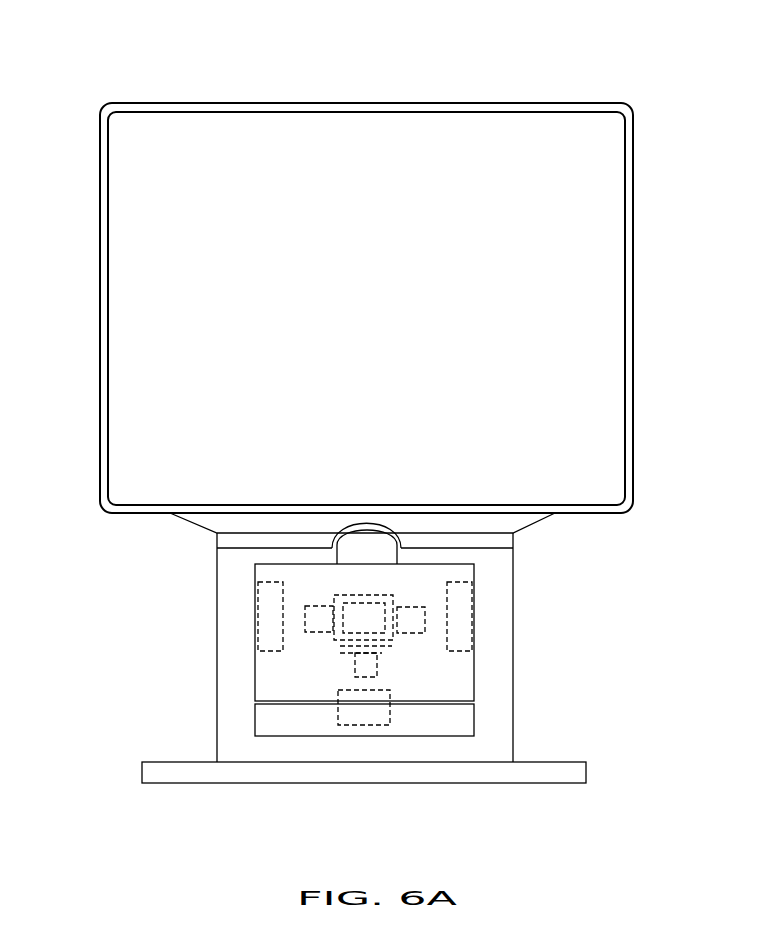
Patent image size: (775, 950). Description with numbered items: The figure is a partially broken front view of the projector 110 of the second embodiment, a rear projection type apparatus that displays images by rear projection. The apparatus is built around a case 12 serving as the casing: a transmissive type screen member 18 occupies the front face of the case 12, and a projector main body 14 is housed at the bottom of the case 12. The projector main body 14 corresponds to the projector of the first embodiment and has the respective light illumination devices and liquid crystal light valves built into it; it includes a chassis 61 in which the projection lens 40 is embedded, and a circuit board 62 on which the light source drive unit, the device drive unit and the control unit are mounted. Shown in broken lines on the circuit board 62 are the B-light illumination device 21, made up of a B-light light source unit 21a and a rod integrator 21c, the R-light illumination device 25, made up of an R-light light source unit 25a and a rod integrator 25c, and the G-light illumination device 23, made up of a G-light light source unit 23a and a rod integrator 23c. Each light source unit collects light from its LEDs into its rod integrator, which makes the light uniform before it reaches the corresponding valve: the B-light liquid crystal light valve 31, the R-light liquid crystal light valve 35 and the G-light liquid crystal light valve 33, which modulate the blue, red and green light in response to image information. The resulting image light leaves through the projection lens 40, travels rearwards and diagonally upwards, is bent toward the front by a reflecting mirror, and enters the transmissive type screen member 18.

The projector 110 is at (628, 95).
The transmissive type screen member 18 is at (604, 266).
The case 12 is at (513, 598).
The projector main body 14 is at (497, 684).
The projection lens 40 is at (372, 545).
The circuit board 62 is at (474, 572).
The chassis 61 is at (467, 722).
The R-light liquid crystal light valve 35 is at (393, 605).
The B-light liquid crystal light valve 31 is at (337, 598).
The G-light liquid crystal light valve 33 is at (395, 648).
The B-light illumination device 21 is at (245, 646).
The B-light light source unit 21a is at (255, 605).
The rod integrator 21c is at (318, 632).
The R-light illumination device 25 is at (506, 573).
The R-light light source unit 25a is at (472, 625).
The rod integrator 25c is at (403, 633).
The G-light illumination device 23 is at (310, 744).
The G-light light source unit 23a is at (357, 727).
The rod integrator 23c is at (352, 672).